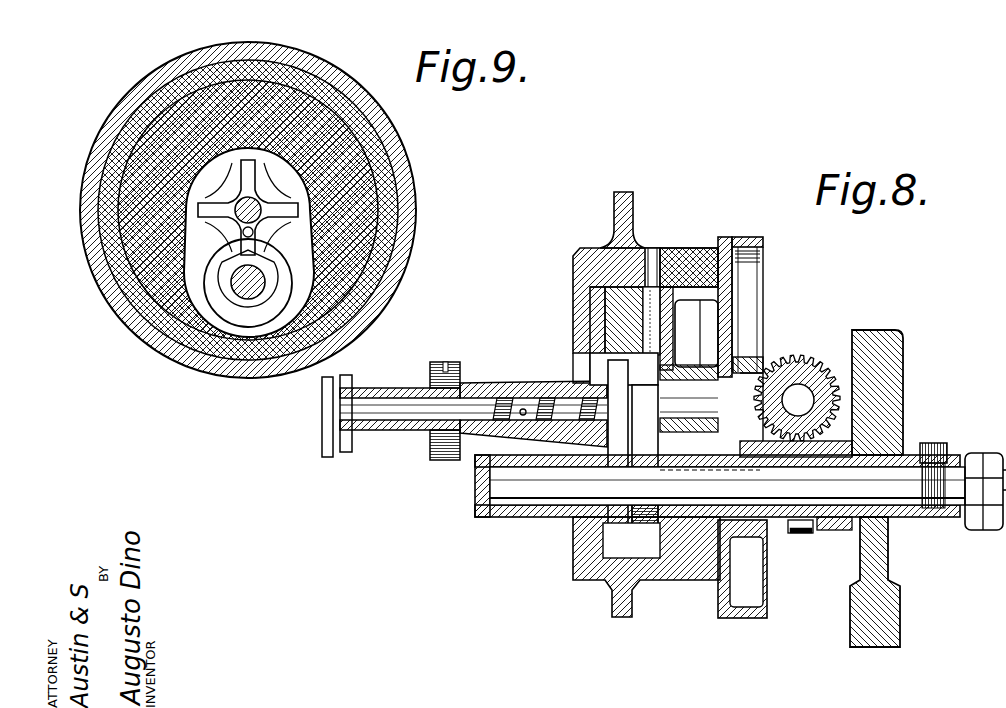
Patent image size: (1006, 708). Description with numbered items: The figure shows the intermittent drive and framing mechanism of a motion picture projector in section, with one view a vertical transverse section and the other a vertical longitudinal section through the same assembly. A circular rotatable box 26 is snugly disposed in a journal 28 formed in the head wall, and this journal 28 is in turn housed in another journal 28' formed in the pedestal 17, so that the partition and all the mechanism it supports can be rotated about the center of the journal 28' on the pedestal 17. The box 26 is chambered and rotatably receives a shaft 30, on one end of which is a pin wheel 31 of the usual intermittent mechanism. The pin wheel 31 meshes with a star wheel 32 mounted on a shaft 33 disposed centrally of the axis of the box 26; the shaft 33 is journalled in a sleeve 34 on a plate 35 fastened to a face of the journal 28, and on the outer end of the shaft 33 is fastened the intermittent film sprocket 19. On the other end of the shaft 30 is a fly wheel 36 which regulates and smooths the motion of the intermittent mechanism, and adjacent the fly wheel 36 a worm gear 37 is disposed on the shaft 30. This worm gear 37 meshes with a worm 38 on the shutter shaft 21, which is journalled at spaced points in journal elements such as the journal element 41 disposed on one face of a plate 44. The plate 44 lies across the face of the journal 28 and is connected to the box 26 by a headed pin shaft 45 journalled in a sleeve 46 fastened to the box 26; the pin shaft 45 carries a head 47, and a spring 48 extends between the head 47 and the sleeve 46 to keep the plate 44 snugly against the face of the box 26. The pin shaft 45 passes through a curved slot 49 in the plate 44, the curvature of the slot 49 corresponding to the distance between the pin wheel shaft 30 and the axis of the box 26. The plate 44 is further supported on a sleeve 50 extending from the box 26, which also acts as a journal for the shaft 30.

In FIG. 8, the pedestal 17 is at (614, 227).
In FIG. 8, the intermittent film sprocket 19 is at (440, 364).
In FIG. 8, the shutter shaft 21 is at (812, 352).
In FIG. 9, the box 26 is at (352, 178).
In FIG. 8, the box 26 is at (605, 312).
In FIG. 9, the journal 28 is at (280, 210).
In FIG. 8, the journal 28 is at (650, 251).
In FIG. 9, the journal 28' is at (248, 202).
In FIG. 8, the journal 28' is at (697, 243).
In FIG. 9, the shaft 30 is at (248, 300).
In FIG. 8, the shaft 30 is at (727, 486).
In FIG. 9, the pin wheel 31 is at (302, 273).
In FIG. 8, the pin wheel 31 is at (587, 520).
In FIG. 9, the star wheel 32 is at (233, 183).
In FIG. 8, the star wheel 32 is at (590, 361).
In FIG. 9, the shaft 33 is at (245, 236).
In FIG. 8, the shaft 33 is at (364, 412).
In FIG. 8, the sleeve 34 is at (502, 378).
In FIG. 8, the plate 35 is at (590, 277).
In FIG. 8, the fly wheel 36 is at (885, 368).
In FIG. 8, the worm gear 37 is at (793, 533).
In FIG. 8, the worm 38 is at (805, 366).
In FIG. 8, the journal element 41 is at (745, 348).
In FIG. 8, the plate 44 is at (740, 273).
In FIG. 8, the headed pin shaft 45 is at (742, 368).
In FIG. 8, the sleeve 46 is at (727, 463).
In FIG. 8, the head 47 is at (662, 403).
In FIG. 8, the spring 48 is at (660, 462).
In FIG. 8, the curved slot 49 is at (760, 375).
In FIG. 8, the sleeve 50 is at (755, 540).